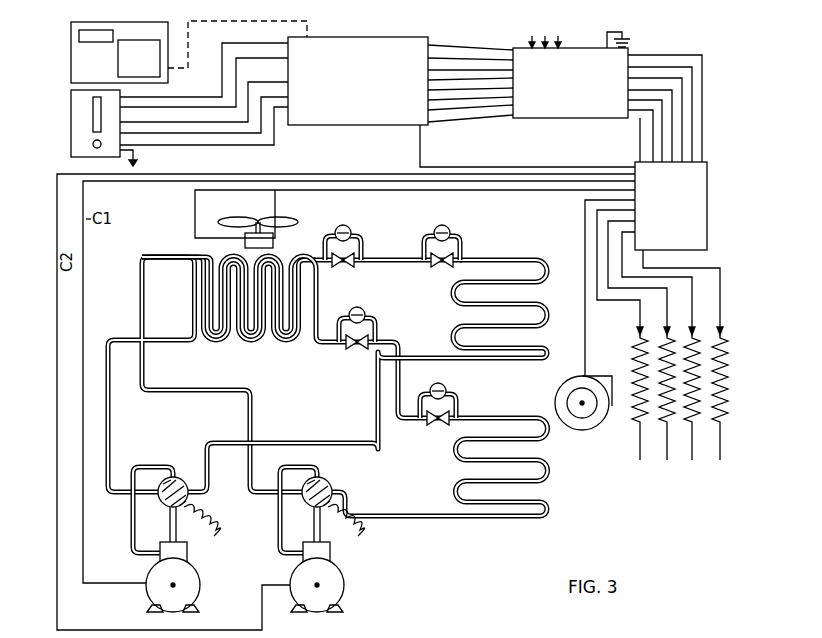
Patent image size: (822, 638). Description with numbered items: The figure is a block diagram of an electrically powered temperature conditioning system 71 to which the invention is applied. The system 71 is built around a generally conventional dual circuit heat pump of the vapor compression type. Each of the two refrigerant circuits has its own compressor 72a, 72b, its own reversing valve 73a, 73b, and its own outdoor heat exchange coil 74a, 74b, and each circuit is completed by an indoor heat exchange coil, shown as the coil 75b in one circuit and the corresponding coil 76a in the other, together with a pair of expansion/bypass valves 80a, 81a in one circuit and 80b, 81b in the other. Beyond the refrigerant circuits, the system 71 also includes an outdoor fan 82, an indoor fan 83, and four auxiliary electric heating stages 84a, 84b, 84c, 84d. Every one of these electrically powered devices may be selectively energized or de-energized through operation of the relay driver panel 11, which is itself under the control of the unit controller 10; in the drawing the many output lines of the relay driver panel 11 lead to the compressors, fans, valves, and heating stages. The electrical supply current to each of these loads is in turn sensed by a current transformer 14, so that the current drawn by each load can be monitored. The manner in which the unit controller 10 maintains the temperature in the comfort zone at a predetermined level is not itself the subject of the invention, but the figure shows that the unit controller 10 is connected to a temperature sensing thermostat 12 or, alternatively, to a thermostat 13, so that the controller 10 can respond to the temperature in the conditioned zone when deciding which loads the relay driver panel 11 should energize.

The unit controller 10 is at (359, 87).
The relay driver panel 11 is at (578, 89).
The temperature sensing thermostat 12 is at (71, 140).
The thermostat 13 is at (71, 32).
The current transformer 14 is at (682, 216).
The temperature conditioning system 71 is at (414, 538).
The compressor 72a is at (199, 591).
The compressor 72b is at (346, 592).
The reversing valve 73a is at (176, 477).
The reversing valve 73b is at (326, 483).
The outdoor heat exchange coil 74a is at (233, 342).
The outdoor heat exchange coil 74b is at (280, 342).
The indoor heat exchange coil 75b is at (537, 416).
The indoor coil 76a is at (537, 258).
The expansion/bypass valve 80a is at (350, 235).
The expansion/bypass valve 80b is at (363, 321).
The expansion/bypass valve 81a is at (445, 235).
The expansion/bypass valve 81b is at (445, 390).
The outdoor fan 82 is at (283, 222).
The indoor fan 83 is at (581, 431).
The auxiliary electric heating stage 84a is at (640, 430).
The auxiliary electric heating stage 84b is at (666, 460).
The auxiliary electric heating stage 84c is at (692, 462).
The auxiliary electric heating stage 84d is at (720, 462).